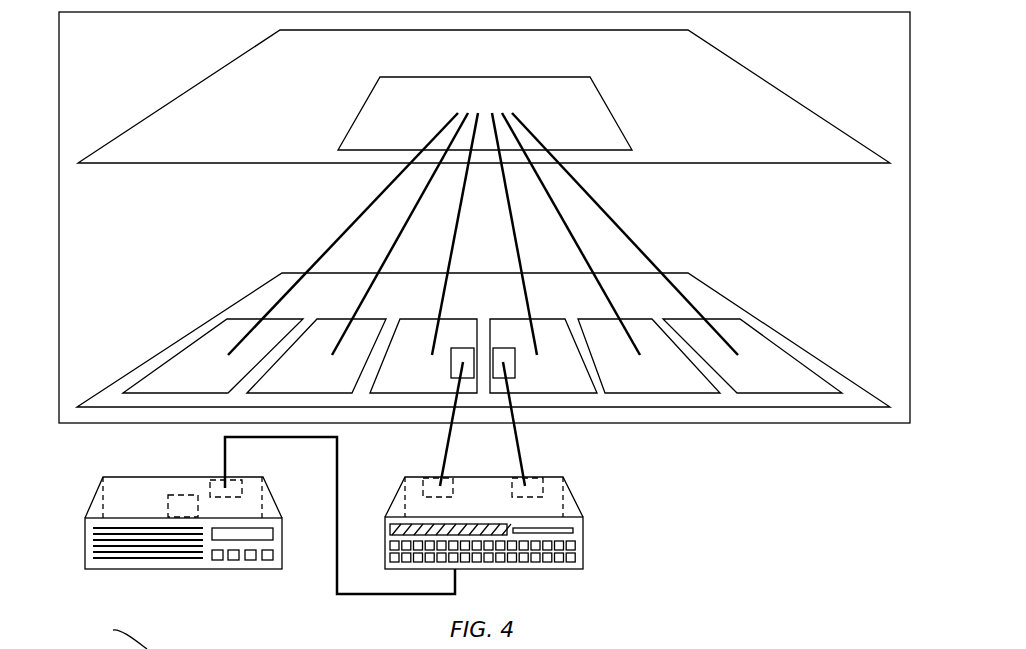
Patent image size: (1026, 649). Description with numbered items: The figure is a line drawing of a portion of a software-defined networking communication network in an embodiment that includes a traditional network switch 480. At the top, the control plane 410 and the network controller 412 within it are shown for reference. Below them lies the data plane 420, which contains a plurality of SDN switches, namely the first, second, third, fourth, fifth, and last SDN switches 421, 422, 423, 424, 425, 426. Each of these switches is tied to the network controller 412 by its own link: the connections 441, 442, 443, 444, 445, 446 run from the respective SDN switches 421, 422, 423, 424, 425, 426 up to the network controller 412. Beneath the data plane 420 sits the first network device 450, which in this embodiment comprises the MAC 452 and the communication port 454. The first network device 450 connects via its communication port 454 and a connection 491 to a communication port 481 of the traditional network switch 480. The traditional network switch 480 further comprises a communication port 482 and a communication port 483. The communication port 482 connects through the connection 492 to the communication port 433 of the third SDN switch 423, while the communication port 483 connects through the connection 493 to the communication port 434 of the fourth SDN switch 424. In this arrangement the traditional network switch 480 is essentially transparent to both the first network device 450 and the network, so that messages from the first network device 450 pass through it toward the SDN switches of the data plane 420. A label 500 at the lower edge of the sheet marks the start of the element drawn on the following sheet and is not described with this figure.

The control plane 410 is at (655, 60).
The network controller 412 is at (579, 105).
The data plane 420 is at (653, 302).
The first SDN switch 421 is at (211, 383).
The second SDN switch 422 is at (323, 383).
The third SDN switch 423 is at (428, 383).
The fourth SDN switch 424 is at (568, 383).
The fifth SDN switch 425 is at (666, 383).
The last SDN switch 426 is at (785, 383).
The communication port 433 is at (455, 378).
The communication port 434 is at (510, 378).
The connection 441 is at (338, 238).
The connection 442 is at (410, 215).
The connection 443 is at (467, 182).
The connection 444 is at (505, 186).
The connection 445 is at (560, 214).
The connection 446 is at (631, 241).
The first network device 450 is at (85, 530).
The MAC 452 is at (168, 500).
The communication port 454 is at (210, 492).
The traditional network switch 480 is at (583, 552).
The communication port 481 is at (455, 562).
The communication port 482 is at (462, 482).
The communication port 483 is at (544, 490).
The connection 491 is at (288, 441).
The connection 492 is at (442, 457).
The connection 493 is at (520, 455).
The system 500 is at (101, 648).